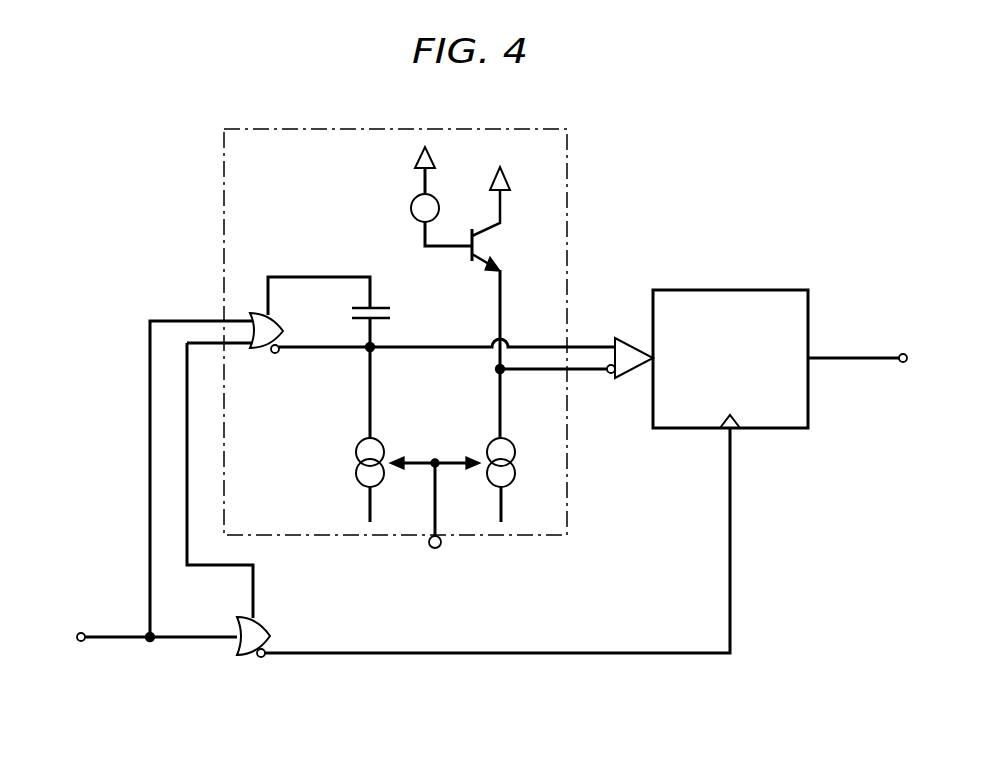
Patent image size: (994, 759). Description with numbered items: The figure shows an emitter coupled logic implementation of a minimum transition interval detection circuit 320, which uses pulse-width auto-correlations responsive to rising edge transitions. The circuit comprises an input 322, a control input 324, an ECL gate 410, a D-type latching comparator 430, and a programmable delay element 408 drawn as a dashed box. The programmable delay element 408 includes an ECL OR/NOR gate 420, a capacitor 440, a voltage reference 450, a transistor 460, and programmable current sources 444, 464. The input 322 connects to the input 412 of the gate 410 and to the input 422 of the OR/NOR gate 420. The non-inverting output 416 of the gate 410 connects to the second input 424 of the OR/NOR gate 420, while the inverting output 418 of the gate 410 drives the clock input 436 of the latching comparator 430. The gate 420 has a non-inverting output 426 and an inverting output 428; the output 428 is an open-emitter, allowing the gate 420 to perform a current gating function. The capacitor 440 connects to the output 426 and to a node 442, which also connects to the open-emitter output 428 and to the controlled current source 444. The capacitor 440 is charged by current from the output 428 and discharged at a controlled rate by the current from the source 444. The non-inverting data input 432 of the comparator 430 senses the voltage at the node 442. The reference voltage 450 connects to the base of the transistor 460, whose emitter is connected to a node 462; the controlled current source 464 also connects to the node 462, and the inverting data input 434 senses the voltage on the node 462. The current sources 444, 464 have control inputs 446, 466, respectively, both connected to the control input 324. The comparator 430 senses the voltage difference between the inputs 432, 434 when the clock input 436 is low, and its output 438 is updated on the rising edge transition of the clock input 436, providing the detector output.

The minimum transition interval detection circuit 320 is at (180, 126).
The input 322 is at (83, 642).
The control input 324 is at (440, 548).
The programmable delay element 408 is at (567, 172).
The ECL gate 410 is at (245, 655).
The input of gate 410 412 is at (230, 637).
The non-inverting output 416 is at (255, 622).
The inverting output 418 is at (263, 658).
The ECL OR/NOR gate 420 is at (255, 313).
The input of OR/NOR gate 422 is at (237, 321).
The second input 424 is at (236, 343).
The non-inverting output 426 is at (267, 316).
The inverting output 428 is at (278, 352).
The D-type latching comparator 430 is at (758, 290).
The non-inverting data input 432 is at (614, 345).
The inverting data input 434 is at (612, 374).
The clock input 436 is at (733, 432).
The output 438 is at (815, 356).
The capacitor 440 is at (384, 312).
The node 442 is at (372, 350).
The programmable current source 444 is at (356, 452).
The control input 446 is at (394, 468).
The voltage reference 450 is at (411, 206).
The transistor 460 is at (483, 268).
The node 462 is at (503, 372).
The programmable current source 464 is at (515, 450).
The control input 466 is at (478, 462).